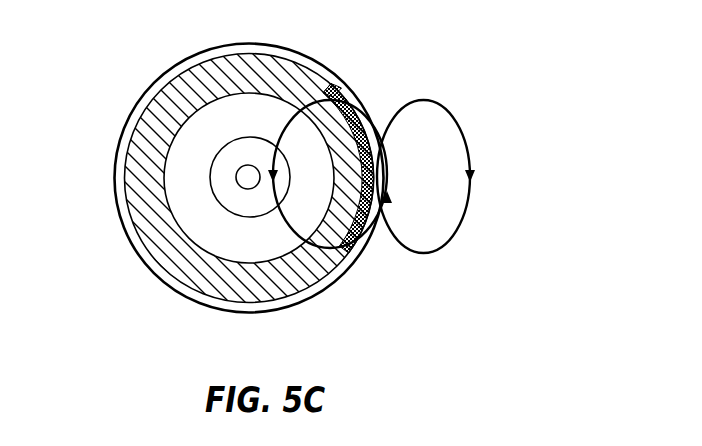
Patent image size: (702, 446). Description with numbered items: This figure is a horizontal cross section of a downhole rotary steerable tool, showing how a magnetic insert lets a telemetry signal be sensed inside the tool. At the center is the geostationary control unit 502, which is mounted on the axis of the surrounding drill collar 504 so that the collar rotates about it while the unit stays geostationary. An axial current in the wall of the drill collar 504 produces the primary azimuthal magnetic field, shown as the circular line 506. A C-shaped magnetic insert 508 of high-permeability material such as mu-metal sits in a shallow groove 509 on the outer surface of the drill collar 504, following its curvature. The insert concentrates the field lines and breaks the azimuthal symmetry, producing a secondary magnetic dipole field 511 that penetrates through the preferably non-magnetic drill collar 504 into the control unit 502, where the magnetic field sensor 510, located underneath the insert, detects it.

The geostationary control unit 502 is at (240, 170).
The drill collar 504 is at (168, 255).
The primary azimuthal magnetic field 506 is at (328, 290).
The magnetic insert 508 is at (345, 97).
The shallow groove 509 is at (328, 85).
The magnetic field sensor 510 is at (248, 180).
The secondary magnetic dipole field 511 is at (425, 252).